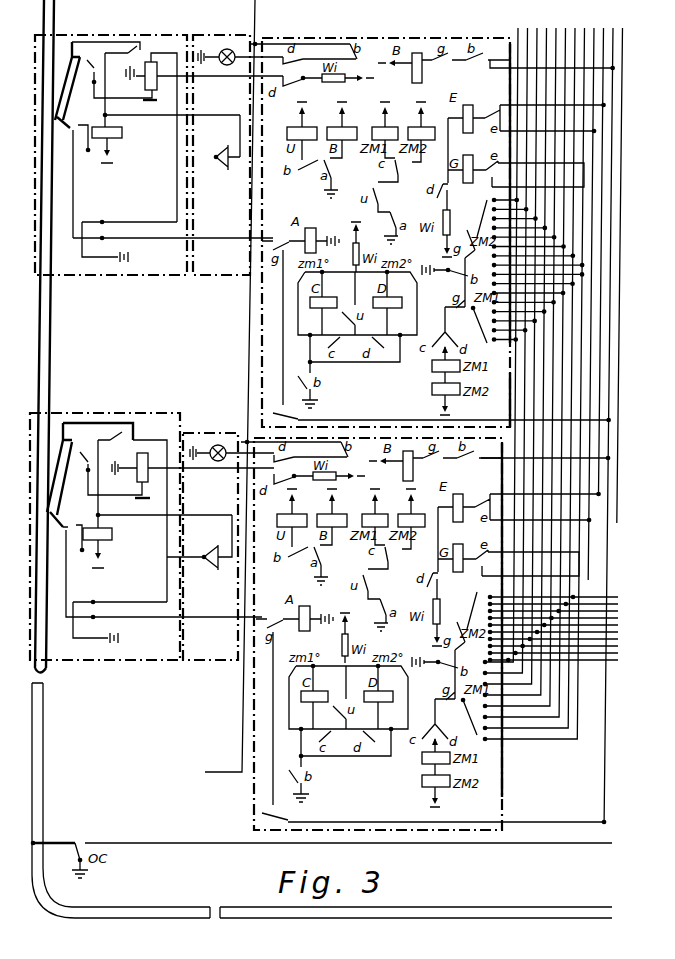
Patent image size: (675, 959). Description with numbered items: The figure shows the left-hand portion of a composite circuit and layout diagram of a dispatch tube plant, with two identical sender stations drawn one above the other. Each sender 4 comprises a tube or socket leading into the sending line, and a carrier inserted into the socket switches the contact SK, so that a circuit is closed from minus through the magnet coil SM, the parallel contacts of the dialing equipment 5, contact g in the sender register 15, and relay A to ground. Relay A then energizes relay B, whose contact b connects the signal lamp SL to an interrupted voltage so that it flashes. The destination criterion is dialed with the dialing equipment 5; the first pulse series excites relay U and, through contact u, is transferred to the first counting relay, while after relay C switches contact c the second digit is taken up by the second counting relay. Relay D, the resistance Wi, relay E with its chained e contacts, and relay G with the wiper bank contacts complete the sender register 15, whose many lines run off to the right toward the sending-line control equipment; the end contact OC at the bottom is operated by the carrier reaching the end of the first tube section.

The sender 4 is at (156, 347).
The dialing equipment 5 is at (233, 347).
The sender register 15 is at (429, 434).